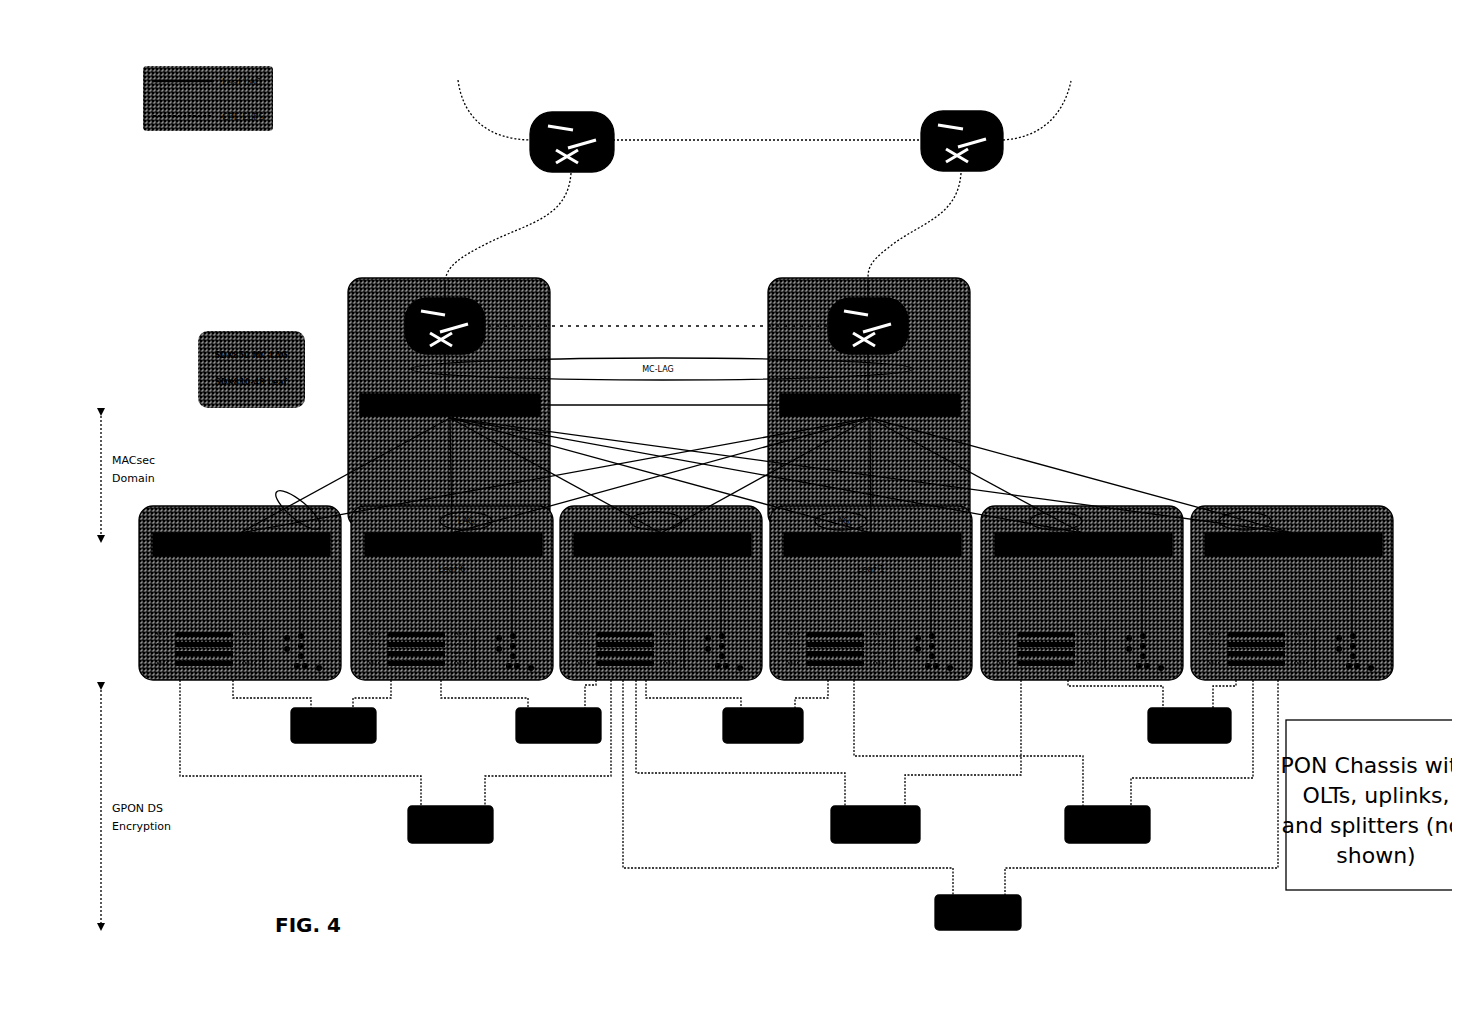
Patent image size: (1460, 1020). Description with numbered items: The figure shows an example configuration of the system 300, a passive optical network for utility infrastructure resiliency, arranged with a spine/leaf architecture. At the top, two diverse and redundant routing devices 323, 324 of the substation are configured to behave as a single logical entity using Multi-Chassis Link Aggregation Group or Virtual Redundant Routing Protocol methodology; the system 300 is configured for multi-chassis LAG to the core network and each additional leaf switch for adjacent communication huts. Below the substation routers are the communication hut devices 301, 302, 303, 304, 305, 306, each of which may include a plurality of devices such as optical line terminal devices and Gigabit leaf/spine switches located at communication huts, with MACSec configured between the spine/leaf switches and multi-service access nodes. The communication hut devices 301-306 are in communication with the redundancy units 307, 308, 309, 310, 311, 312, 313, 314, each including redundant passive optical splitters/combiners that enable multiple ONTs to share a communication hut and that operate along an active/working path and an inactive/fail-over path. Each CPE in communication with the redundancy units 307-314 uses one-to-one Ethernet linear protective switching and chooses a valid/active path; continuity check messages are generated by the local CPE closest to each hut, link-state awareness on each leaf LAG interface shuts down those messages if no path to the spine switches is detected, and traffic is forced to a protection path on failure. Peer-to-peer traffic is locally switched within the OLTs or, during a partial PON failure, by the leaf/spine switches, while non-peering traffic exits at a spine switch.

The system 300 is at (1285, 156).
The communication hut device 301 is at (172, 497).
The communication hut device 302 is at (478, 271).
The communication hut device 303 is at (645, 672).
The communication hut device 304 is at (1285, 497).
The communication hut device 305 is at (1100, 497).
The communication hut device 306 is at (918, 271).
The redundancy unit 307 is at (795, 713).
The redundancy unit 308 is at (912, 812).
The redundancy unit 309 is at (1142, 812).
The redundancy unit 310 is at (1140, 712).
The redundancy unit 311 is at (1013, 898).
The redundancy unit 312 is at (580, 735).
The redundancy unit 313 is at (487, 823).
The redundancy unit 314 is at (368, 722).
The routing device 323 is at (575, 161).
The routing device 324 is at (985, 161).